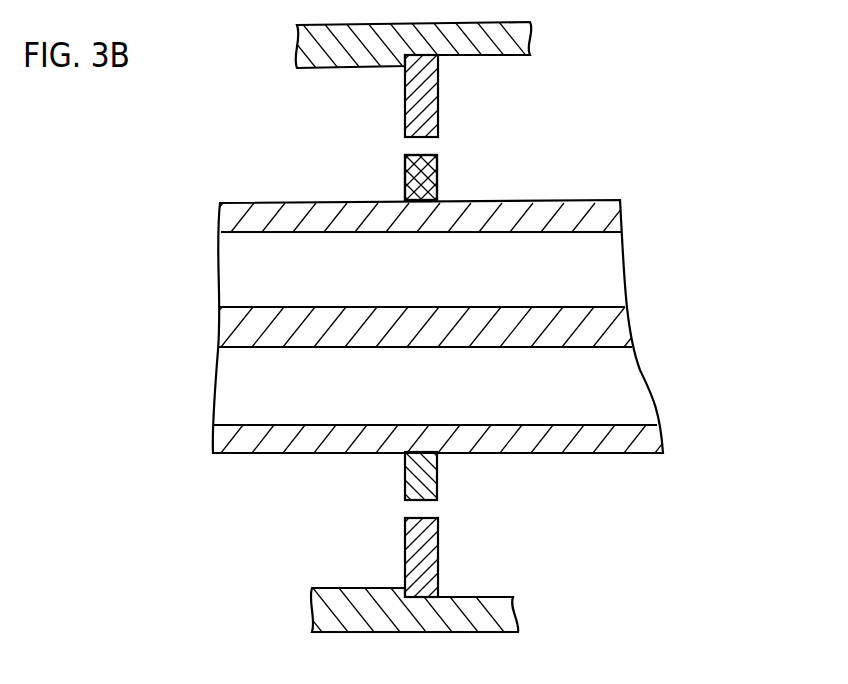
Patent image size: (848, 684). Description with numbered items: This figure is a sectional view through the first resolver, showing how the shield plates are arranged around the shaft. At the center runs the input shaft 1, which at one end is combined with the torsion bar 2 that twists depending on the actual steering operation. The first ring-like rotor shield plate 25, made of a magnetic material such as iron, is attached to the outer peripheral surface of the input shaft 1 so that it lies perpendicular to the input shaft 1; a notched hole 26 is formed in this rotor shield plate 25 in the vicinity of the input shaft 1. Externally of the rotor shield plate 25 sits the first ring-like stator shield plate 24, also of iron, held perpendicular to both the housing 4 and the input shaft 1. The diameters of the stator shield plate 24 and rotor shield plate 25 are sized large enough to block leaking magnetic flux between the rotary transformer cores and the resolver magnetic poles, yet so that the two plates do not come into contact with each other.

The input shaft 1 is at (608, 201).
The torsion bar 2 is at (597, 305).
The housing 4 is at (507, 43).
The first ring-like stator shield plate 24 is at (438, 88).
The first ring-like rotor shield plate 25 is at (437, 185).
The notched hole 26 is at (405, 185).